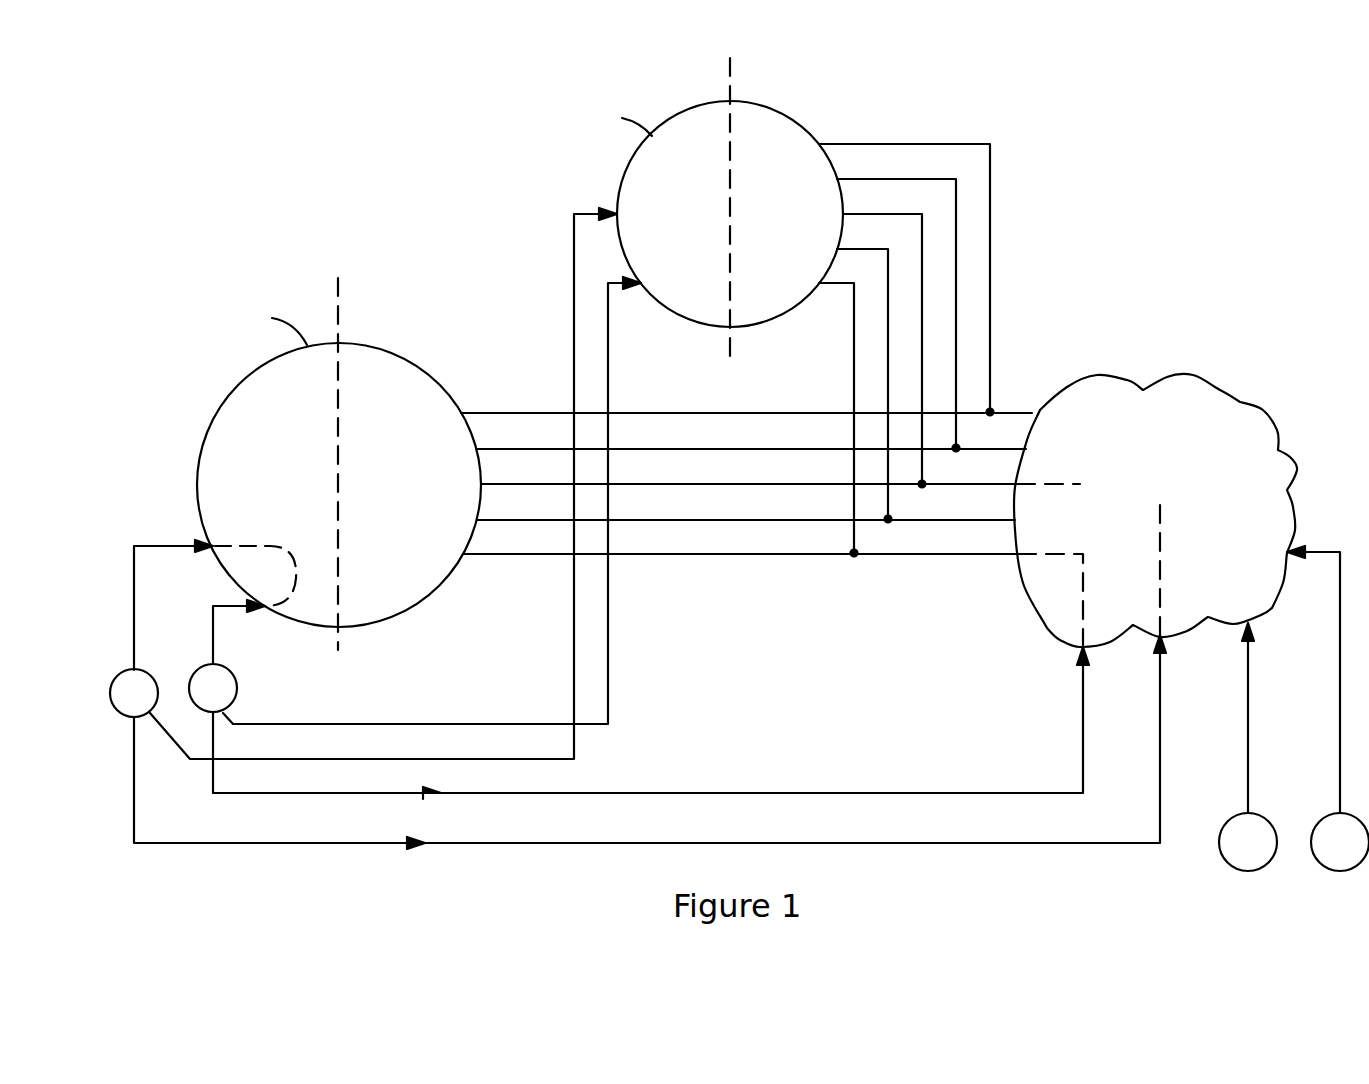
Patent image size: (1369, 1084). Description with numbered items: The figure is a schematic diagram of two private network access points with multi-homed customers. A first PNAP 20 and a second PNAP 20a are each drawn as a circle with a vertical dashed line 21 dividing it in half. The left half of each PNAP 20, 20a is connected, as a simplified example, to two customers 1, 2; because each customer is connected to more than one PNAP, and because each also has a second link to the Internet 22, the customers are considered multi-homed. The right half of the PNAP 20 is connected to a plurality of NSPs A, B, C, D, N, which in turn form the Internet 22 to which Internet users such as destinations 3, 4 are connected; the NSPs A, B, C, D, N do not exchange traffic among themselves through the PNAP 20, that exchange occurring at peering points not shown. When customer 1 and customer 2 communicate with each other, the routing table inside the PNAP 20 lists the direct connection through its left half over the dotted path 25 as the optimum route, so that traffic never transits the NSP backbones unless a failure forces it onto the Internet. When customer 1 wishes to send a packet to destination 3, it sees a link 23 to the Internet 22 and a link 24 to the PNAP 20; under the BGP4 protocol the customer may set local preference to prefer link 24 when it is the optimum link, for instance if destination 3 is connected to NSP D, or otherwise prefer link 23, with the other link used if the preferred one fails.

The customer 1 is at (132, 667).
The customer 2 is at (212, 662).
The destination 3 is at (1232, 868).
The destination 4 is at (1332, 868).
The first PNAP 20 is at (393, 348).
The second PNAP 20a is at (800, 122).
The vertical dashed line 21 is at (340, 310).
The Internet 22 is at (1240, 402).
The link 23 is at (748, 843).
The link 24 is at (150, 543).
The dotted path 25 is at (293, 577).
The NSP A is at (563, 412).
The NSP B is at (563, 448).
The NSP C is at (563, 483).
The NSP D is at (563, 519).
The NSP N is at (563, 553).